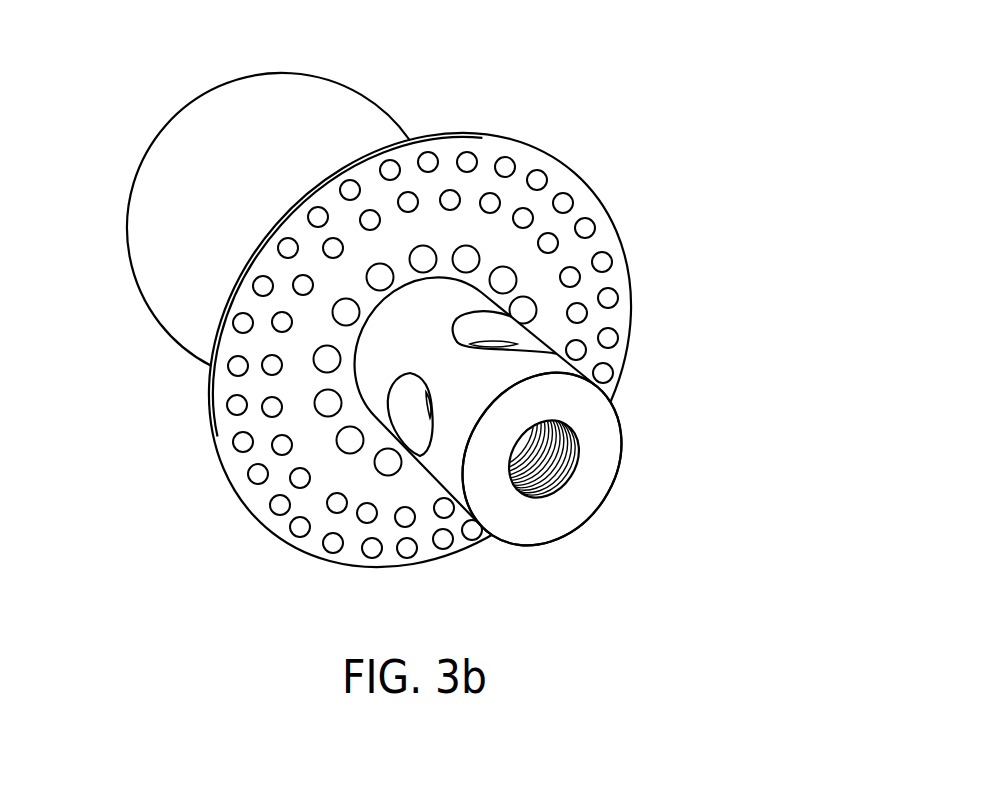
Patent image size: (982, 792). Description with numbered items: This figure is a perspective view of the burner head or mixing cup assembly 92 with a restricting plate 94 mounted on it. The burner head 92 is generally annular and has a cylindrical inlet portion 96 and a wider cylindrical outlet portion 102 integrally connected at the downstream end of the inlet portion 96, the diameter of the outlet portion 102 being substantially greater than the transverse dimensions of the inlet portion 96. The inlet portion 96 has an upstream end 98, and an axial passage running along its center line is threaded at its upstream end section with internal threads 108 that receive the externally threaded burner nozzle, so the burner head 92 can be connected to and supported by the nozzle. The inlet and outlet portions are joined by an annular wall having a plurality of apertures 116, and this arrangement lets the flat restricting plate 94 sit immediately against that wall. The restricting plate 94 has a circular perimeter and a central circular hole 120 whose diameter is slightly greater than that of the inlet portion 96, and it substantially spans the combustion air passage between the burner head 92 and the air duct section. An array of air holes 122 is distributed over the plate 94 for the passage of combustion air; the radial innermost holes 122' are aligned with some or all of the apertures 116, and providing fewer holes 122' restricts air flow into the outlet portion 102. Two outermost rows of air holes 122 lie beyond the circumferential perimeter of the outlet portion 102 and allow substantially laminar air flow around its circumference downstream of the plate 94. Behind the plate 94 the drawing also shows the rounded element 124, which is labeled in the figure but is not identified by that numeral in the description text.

The burner head 92 is at (637, 192).
The restricting plate 94 is at (287, 547).
The inlet portion 96 is at (597, 487).
The upstream end 98 is at (567, 523).
The outlet portion 102 is at (363, 128).
The internal threads 108 is at (508, 466).
The apertures 116 is at (472, 250).
The central circular hole 120 is at (360, 330).
The air holes 122 is at (497, 355).
The radial innermost holes 122' is at (333, 366).
The dome cover 124 is at (165, 300).